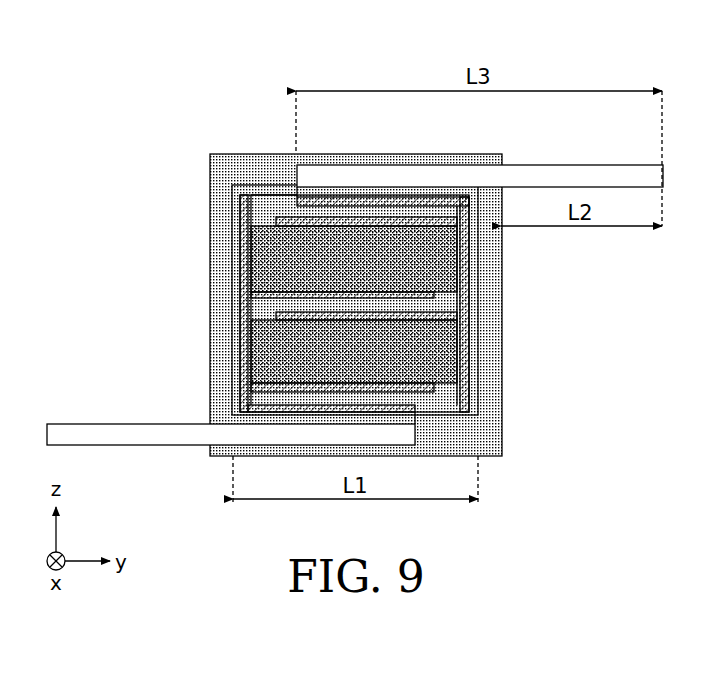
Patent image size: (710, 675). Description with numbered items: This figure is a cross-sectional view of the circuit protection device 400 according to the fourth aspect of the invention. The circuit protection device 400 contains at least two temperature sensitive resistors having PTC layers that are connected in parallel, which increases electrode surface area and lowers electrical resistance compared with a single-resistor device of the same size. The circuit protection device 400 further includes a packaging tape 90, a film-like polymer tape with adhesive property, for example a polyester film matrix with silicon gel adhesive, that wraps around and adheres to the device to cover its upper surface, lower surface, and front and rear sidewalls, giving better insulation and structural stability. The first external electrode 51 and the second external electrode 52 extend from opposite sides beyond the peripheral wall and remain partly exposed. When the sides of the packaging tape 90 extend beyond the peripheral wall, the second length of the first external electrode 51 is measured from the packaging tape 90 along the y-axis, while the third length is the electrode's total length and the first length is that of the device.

The circuit protection device 400 is at (354, 284).
The packaging tape 90 is at (495, 305).
The first external electrode 51 is at (582, 163).
The second external electrode 52 is at (141, 455).